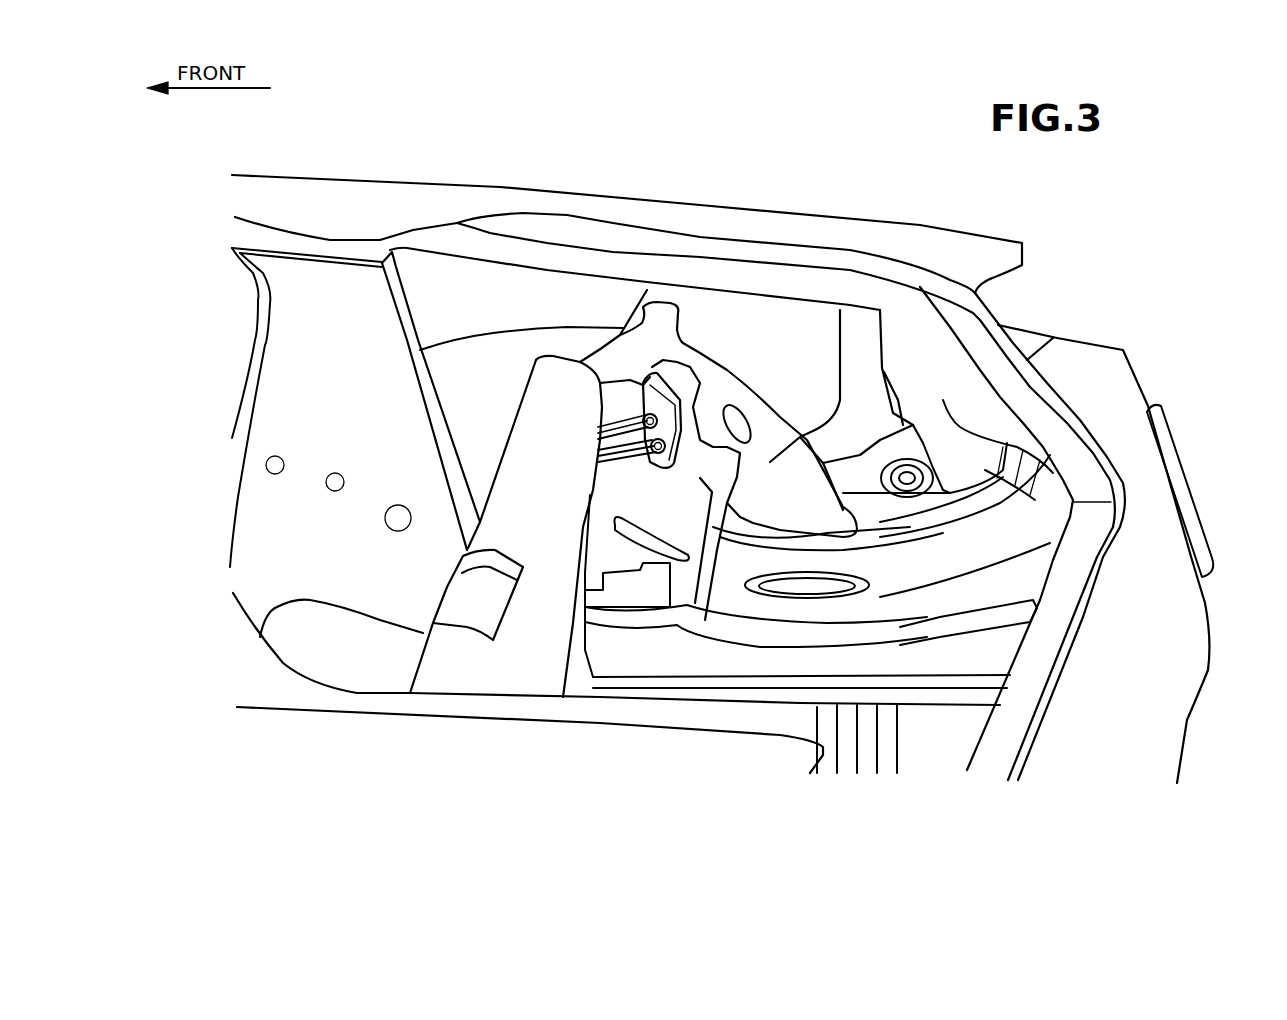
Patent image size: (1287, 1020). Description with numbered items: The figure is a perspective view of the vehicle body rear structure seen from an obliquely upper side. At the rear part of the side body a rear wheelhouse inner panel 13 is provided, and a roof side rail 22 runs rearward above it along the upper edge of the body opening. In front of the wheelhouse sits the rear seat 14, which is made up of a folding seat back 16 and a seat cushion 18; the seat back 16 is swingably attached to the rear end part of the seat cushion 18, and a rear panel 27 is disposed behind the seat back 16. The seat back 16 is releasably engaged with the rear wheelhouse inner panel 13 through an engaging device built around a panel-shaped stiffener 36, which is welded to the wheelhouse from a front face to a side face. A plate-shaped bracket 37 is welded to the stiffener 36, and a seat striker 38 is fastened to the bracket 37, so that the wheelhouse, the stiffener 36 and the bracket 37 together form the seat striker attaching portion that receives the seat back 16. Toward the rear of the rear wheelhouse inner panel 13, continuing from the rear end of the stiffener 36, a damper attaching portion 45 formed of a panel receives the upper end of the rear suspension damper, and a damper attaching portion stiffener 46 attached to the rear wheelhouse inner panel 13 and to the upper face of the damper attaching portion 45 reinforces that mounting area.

The rear wheelhouse inner panel 13 is at (779, 316).
The rear seat 14 is at (452, 660).
The seat back 16 is at (532, 660).
The seat cushion 18 is at (343, 667).
The roof side rail 22 is at (872, 242).
The rear panel 27 is at (1040, 657).
The stiffener 36 is at (600, 353).
The bracket 37 is at (665, 372).
The seat striker 38 is at (670, 400).
The damper attaching portion 45 is at (903, 502).
The damper attaching portion stiffener 46 is at (927, 368).